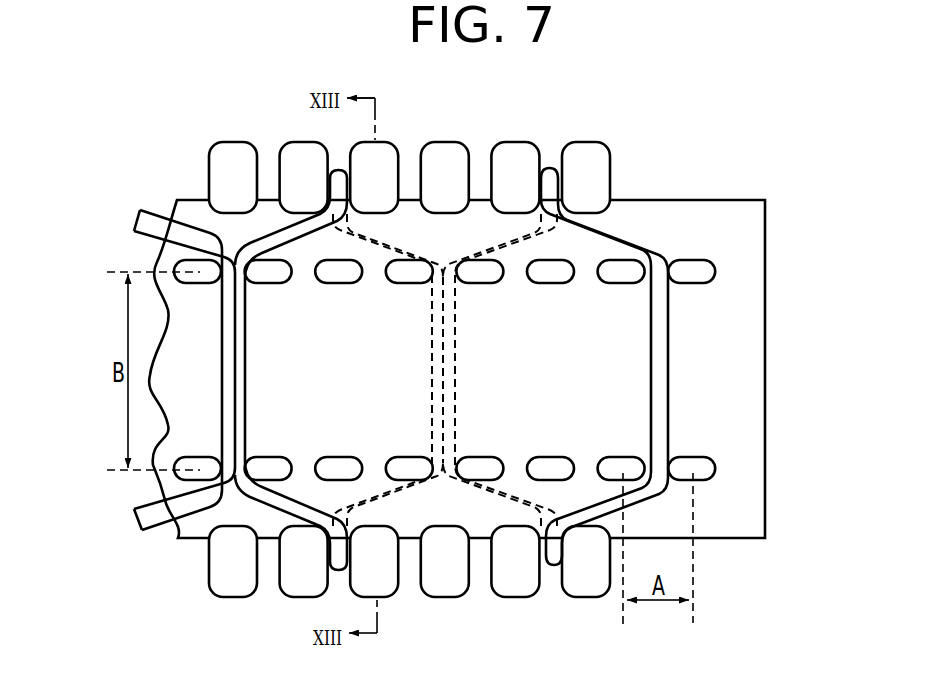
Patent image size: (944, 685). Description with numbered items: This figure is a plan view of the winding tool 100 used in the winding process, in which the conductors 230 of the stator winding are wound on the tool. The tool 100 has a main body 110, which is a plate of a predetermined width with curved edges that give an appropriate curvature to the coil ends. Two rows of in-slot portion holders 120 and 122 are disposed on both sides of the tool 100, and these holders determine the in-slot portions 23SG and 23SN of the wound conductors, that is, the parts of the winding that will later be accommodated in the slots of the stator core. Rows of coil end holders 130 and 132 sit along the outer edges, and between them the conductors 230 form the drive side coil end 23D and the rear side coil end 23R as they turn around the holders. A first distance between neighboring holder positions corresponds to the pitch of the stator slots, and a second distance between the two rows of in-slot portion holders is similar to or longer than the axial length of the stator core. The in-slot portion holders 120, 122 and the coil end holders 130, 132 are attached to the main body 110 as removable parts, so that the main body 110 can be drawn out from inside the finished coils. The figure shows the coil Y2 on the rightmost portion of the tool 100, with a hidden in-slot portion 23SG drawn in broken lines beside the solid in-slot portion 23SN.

The winding tool 100 is at (490, 362).
The main body 110 is at (700, 213).
The in-slot portion holder 120 is at (705, 270).
The in-slot portion holder 122 is at (707, 470).
The coil end holder 130 is at (583, 148).
The coil end holder 132 is at (574, 581).
The conductor 230 is at (660, 482).
The drive side coil end 23D is at (548, 163).
The rear side coil end 23R is at (342, 577).
The in-slot portion 23SN is at (674, 309).
The in-slot portion 23SG is at (455, 400).
The coil Y2 is at (682, 407).